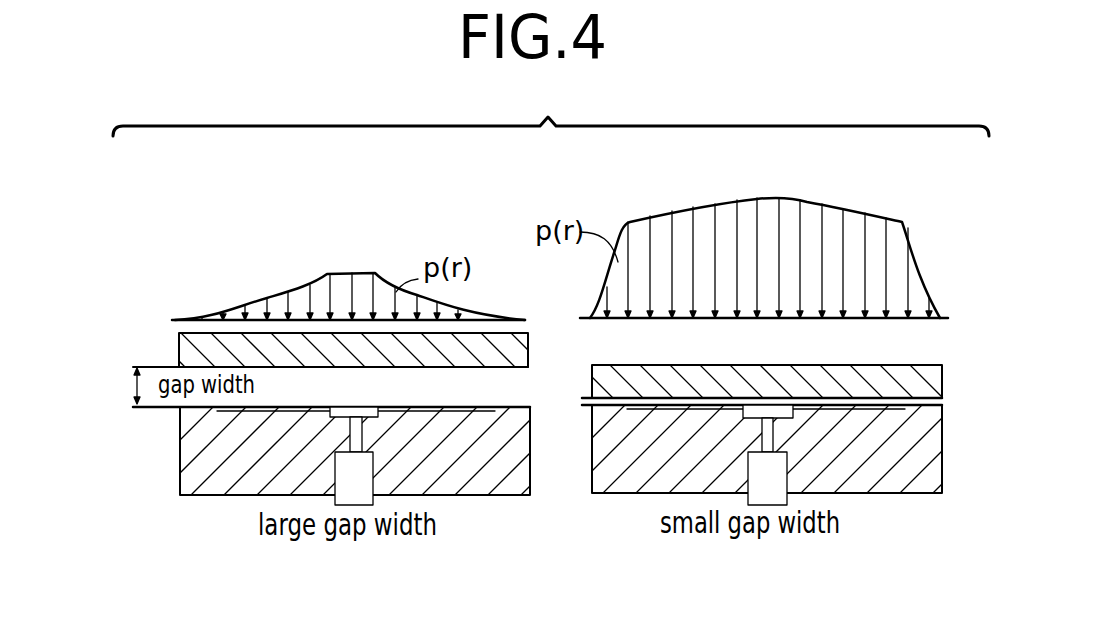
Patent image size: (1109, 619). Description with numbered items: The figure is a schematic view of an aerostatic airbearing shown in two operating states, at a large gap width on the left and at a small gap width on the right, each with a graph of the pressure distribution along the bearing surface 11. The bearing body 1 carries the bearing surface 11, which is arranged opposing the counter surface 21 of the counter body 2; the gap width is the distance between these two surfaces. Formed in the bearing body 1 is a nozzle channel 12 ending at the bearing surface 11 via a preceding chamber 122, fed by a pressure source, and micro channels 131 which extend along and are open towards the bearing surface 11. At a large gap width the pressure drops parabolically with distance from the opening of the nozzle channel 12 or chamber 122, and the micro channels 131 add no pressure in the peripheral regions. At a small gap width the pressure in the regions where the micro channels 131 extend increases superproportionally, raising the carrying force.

The bearing body 1 is at (187, 474).
The counter body 2 is at (188, 352).
The bearing surface 11 is at (514, 406).
The nozzle channel 12 is at (350, 436).
The counter surface 21 is at (430, 368).
The chamber 122 is at (380, 419).
The micro channels 131 is at (470, 409).